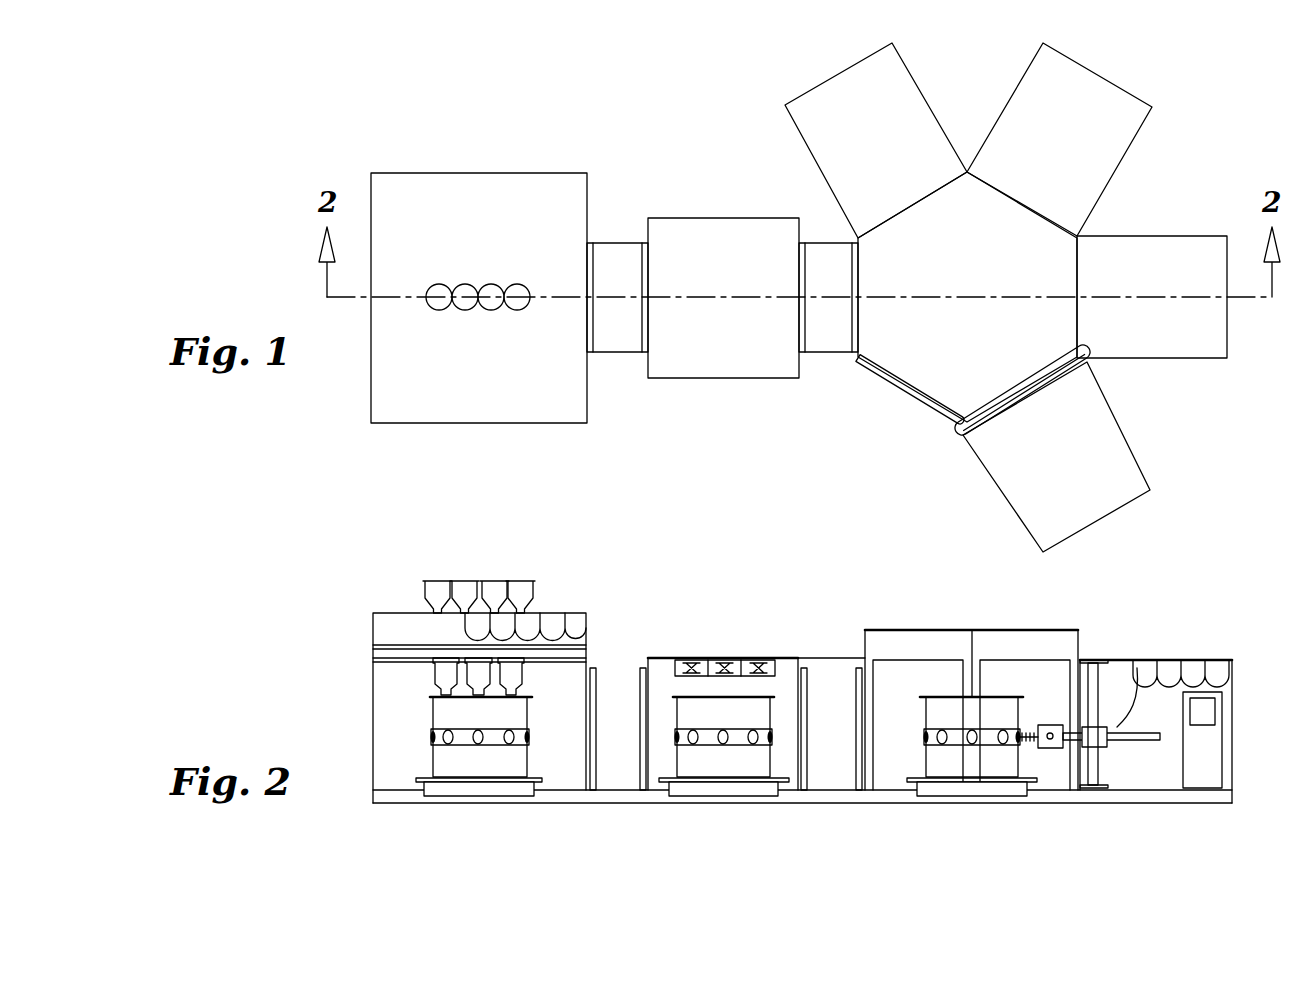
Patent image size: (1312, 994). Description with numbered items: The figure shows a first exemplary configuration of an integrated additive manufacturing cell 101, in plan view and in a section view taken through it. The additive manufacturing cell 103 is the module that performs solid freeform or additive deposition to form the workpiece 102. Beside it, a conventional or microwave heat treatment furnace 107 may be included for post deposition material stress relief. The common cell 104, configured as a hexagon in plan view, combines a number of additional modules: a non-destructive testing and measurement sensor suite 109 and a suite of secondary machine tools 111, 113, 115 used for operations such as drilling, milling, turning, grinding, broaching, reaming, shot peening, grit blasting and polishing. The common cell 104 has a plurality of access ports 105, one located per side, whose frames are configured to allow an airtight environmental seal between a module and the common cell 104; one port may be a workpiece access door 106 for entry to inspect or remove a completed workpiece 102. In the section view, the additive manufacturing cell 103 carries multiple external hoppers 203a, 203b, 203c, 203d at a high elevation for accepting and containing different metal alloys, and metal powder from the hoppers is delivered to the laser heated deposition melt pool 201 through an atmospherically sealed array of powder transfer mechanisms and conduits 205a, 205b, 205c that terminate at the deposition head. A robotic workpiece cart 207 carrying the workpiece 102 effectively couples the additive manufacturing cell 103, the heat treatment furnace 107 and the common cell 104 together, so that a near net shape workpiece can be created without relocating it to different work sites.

In FIG. 1, the integrated additive manufacturing cell 101 is at (525, 115).
In FIG. 2, the integrated additive manufacturing cell 101 is at (767, 592).
In FIG. 2, the workpiece 102 is at (498, 771).
In FIG. 1, the additive manufacturing cell 103 is at (473, 172).
In FIG. 2, the additive manufacturing cell 103 is at (373, 732).
In FIG. 1, the common cell 104 is at (981, 281).
In FIG. 2, the common cell 104 is at (971, 688).
In FIG. 1, the access port 105 is at (918, 207).
In FIG. 2, the access port 105 is at (847, 658).
In FIG. 1, the workpiece access door 106 is at (918, 403).
In FIG. 1, the heat treatment furnace 107 is at (740, 218).
In FIG. 2, the heat treatment furnace 107 is at (730, 658).
In FIG. 1, the non-destructive testing and measurement sensor suite module 109 is at (876, 128).
In FIG. 2, the non-destructive testing and measurement sensor suite module 109 is at (928, 689).
In FIG. 1, the secondary machine tool module 111 is at (1071, 128).
In FIG. 2, the secondary machine tool module 111 is at (1043, 689).
In FIG. 1, the secondary machine tool module 113 is at (1189, 281).
In FIG. 2, the secondary machine tool module 113 is at (1193, 660).
In FIG. 1, the secondary machine tool module 115 is at (1076, 504).
In FIG. 2, the deposition melt pool 201 is at (527, 698).
In FIG. 2, the external hopper 203a is at (437, 580).
In FIG. 2, the external hopper 203b is at (462, 580).
In FIG. 2, the external hopper 203c is at (495, 580).
In FIG. 2, the external hopper 203d is at (522, 580).
In FIG. 2, the powder transfer mechanism and conduit 205a is at (433, 676).
In FIG. 2, the powder transfer mechanism and conduit 205b is at (505, 673).
In FIG. 2, the powder transfer mechanism and conduit 205c is at (459, 669).
In FIG. 2, the robotic workpiece cart 207 is at (453, 795).